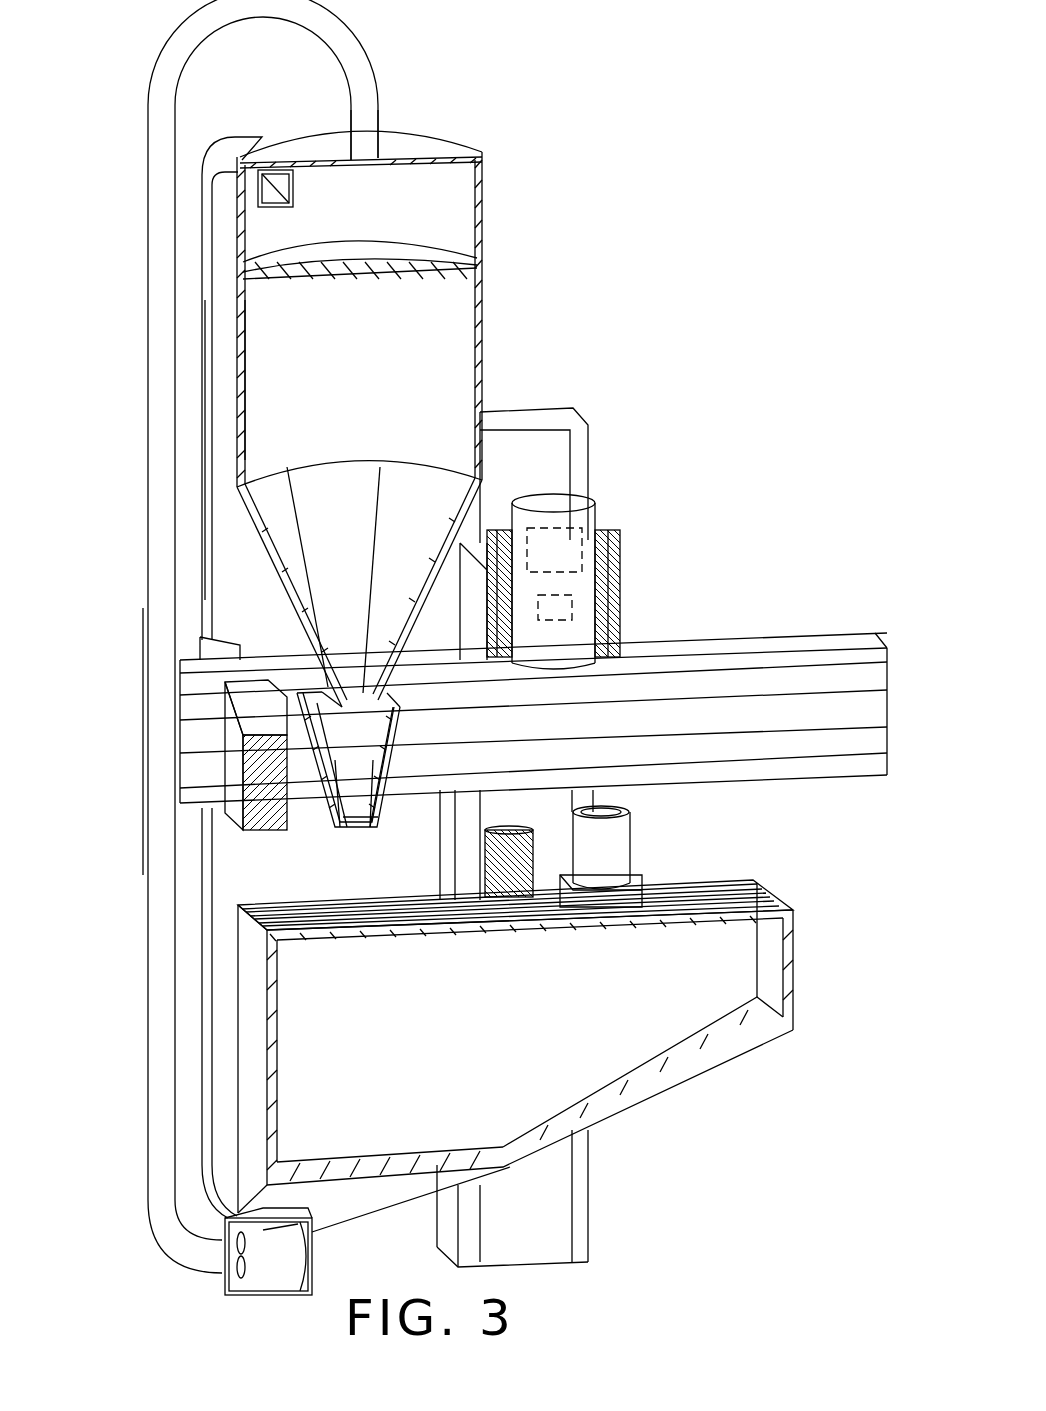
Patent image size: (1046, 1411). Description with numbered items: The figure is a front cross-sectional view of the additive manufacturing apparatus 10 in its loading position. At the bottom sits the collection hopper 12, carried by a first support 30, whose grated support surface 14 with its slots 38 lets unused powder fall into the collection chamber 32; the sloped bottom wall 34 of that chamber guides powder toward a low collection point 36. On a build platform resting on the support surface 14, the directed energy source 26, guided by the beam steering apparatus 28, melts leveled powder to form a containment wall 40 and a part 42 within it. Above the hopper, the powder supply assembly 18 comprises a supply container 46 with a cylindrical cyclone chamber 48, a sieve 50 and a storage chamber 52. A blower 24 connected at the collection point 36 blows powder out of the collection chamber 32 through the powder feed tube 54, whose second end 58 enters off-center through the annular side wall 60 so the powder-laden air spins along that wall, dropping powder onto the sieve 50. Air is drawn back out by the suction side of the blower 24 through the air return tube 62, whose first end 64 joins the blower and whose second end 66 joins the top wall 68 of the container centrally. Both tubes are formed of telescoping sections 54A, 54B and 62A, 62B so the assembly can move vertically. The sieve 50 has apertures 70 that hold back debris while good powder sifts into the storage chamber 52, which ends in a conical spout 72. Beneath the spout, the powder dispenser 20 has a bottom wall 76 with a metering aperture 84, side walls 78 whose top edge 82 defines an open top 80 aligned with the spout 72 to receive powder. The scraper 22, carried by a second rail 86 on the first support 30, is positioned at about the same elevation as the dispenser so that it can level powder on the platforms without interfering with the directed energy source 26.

The apparatus 10 is at (668, 70).
The collection hopper 12 is at (793, 962).
The support surface 14 is at (763, 886).
The powder supply assembly 18 is at (486, 232).
The powder dispenser 20 is at (295, 707).
The scraper 22 is at (240, 752).
The blower 24 is at (258, 1282).
The directed energy source 26 is at (562, 548).
The beam steering apparatus 28 is at (555, 607).
The first support 30 is at (580, 1212).
The collection chamber 32 is at (683, 1010).
The sloped bottom wall 34 is at (665, 1087).
The collection point 36 is at (240, 1192).
The slots 38 is at (268, 905).
The containment wall 40 is at (605, 852).
The part 42 is at (605, 815).
The supply container 46 is at (483, 305).
The cyclone chamber 48 is at (458, 175).
The sieve 50 is at (350, 240).
The storage chamber 52 is at (441, 370).
The powder feed tube 54 is at (220, 236).
The telescoping section 54A is at (218, 300).
The telescoping section 54B is at (210, 940).
The second end 58 is at (300, 178).
The annular side wall 60 is at (258, 186).
The air return tube 62 is at (148, 345).
The telescoping section 62A is at (168, 400).
The telescoping section 62B is at (170, 1020).
The first end 64 is at (222, 1272).
The second end 66 is at (362, 132).
The top wall 68 is at (408, 145).
The apertures 70 is at (413, 248).
The spout 72 is at (422, 500).
The bottom wall 76 is at (342, 830).
The side walls 78 is at (240, 748).
The open top 80 is at (313, 690).
The top edge 82 is at (400, 697).
The aperture 84 is at (363, 830).
The second rail 86 is at (757, 645).